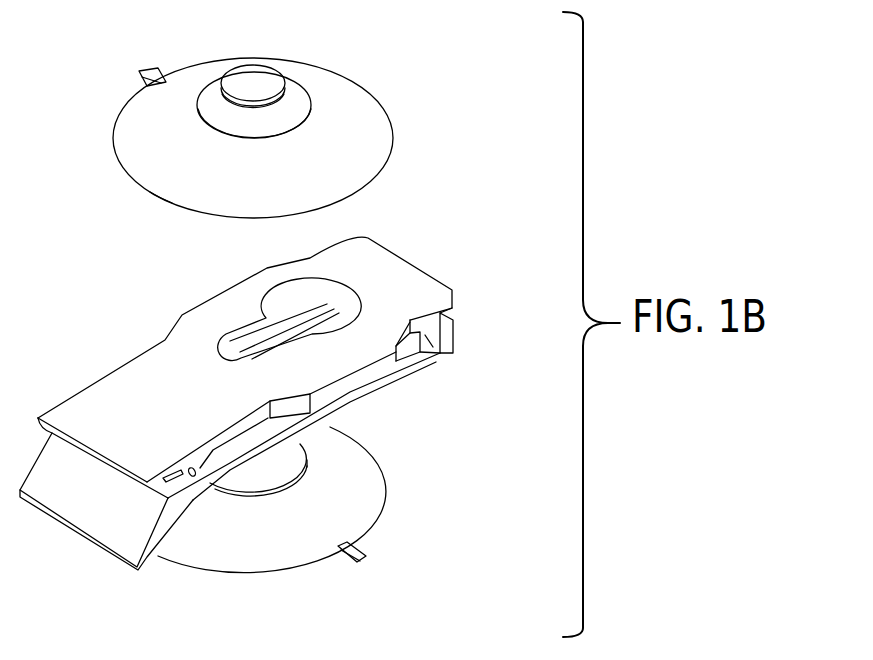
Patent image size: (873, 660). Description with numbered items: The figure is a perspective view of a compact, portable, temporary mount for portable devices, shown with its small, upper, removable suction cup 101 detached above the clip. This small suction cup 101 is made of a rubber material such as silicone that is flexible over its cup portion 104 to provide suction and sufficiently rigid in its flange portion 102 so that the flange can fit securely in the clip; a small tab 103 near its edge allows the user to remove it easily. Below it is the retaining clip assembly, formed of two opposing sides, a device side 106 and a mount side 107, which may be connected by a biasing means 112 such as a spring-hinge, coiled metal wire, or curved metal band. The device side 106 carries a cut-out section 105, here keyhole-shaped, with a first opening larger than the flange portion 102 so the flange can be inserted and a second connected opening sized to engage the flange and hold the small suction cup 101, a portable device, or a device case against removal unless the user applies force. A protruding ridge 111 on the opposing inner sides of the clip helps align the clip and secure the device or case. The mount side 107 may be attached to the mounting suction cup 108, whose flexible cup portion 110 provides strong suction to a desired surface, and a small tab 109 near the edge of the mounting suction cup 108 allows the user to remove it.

The removable suction cup 101 is at (395, 125).
The flange portion 102 is at (247, 62).
The small tab 103 is at (140, 70).
The cup portion 104 is at (161, 195).
The cut-out section 105 is at (216, 322).
The device side 106 is at (455, 289).
The mount side 107 is at (457, 350).
The mounting suction cup 108 is at (276, 540).
The small tab 109 is at (366, 557).
The cup portion 110 is at (388, 488).
The protruding ridge 111 is at (433, 347).
The biasing means 112 is at (189, 487).